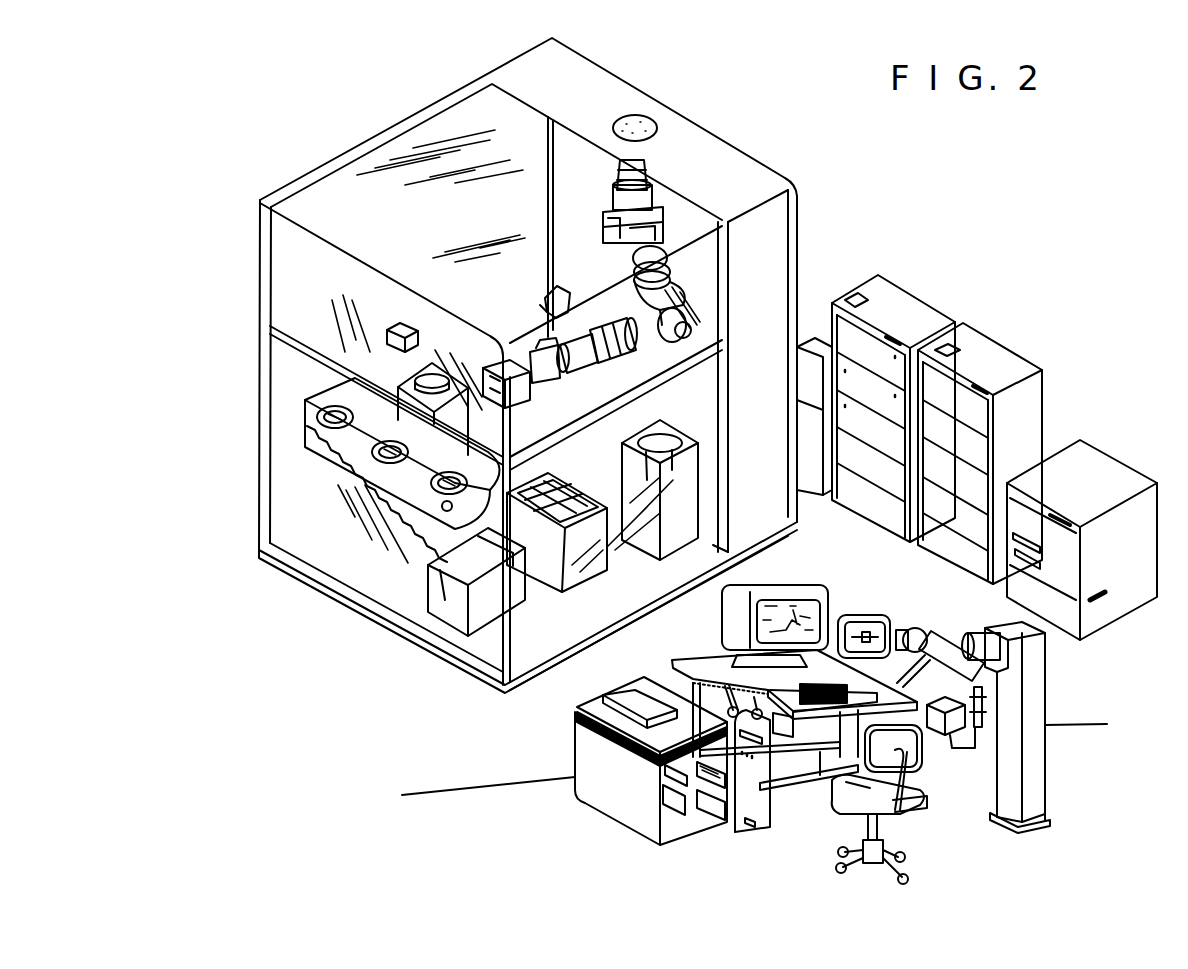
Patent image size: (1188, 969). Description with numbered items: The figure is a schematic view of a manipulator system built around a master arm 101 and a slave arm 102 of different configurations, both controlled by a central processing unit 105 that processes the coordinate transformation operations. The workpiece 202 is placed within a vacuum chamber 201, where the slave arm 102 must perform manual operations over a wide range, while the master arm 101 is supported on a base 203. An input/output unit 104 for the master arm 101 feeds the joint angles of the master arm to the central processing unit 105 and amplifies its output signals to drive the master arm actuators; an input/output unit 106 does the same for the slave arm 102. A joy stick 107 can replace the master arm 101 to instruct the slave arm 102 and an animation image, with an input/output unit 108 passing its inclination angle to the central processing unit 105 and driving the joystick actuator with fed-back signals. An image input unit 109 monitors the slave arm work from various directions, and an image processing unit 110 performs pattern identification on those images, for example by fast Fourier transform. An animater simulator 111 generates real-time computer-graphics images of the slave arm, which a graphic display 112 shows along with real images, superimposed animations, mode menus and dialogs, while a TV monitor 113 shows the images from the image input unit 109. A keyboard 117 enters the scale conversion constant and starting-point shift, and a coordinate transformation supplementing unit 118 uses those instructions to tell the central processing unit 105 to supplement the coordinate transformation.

The master arm 101 is at (980, 717).
The slave arm 102 is at (637, 270).
The input/output unit for the master arm 104 is at (990, 347).
The central processing unit 105 is at (1085, 450).
The input/output unit for the slave arm 106 is at (913, 303).
The joy stick 107 is at (770, 706).
The input/output unit for the joystick 108 is at (758, 825).
The image input unit 109 is at (545, 300).
The image processing unit 110 is at (812, 347).
The animater simulator 111 is at (603, 800).
The graphic display 112 is at (800, 602).
The TV monitor 113 is at (868, 630).
The keyboard 117 is at (927, 737).
The coordinate transformation supplementing unit 118 is at (603, 700).
The vacuum chamber 201 is at (283, 457).
The workpiece 202 is at (430, 388).
The base 203 is at (1033, 787).